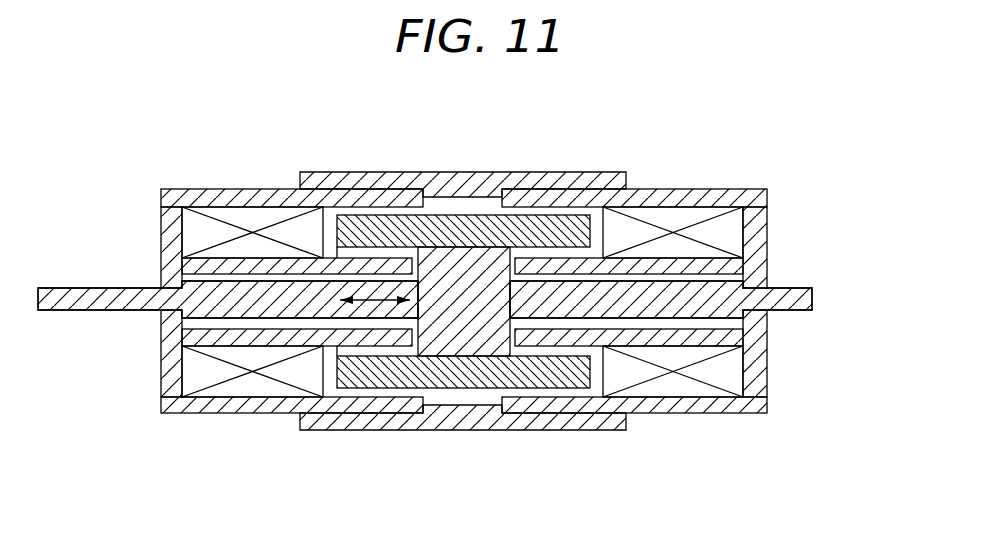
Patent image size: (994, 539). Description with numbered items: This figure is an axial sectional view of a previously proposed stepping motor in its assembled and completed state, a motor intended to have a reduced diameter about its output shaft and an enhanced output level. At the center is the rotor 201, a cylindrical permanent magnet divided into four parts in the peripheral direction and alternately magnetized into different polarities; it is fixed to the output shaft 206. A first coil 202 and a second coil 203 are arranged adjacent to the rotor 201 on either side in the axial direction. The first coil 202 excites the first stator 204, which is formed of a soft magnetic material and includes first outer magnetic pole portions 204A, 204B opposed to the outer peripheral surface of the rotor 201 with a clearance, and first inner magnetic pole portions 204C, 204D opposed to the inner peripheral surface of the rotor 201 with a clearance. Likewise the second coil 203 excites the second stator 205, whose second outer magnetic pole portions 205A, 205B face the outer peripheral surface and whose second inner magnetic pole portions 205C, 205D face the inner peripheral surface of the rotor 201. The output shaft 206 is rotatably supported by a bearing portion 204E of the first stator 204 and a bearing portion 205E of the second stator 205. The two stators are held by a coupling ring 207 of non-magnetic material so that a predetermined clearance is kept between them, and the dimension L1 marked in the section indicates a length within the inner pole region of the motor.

The rotor 201 is at (470, 390).
The first coil 202 is at (240, 388).
The second coil 203 is at (690, 390).
The first stator 204 is at (231, 295).
The first outer magnetic pole portion 204A is at (386, 195).
The first outer magnetic pole portion 204B is at (396, 400).
The first inner magnetic pole portion 204C is at (380, 262).
The first inner magnetic pole portion 204D is at (370, 338).
The bearing portion 204E is at (165, 328).
The second stator 205 is at (699, 303).
The second outer magnetic pole portion 205A is at (548, 195).
The second outer magnetic pole portion 205B is at (577, 408).
The second inner magnetic pole portion 205C is at (547, 262).
The second inner magnetic pole portion 205D is at (545, 338).
The bearing portion 205E is at (762, 268).
The output shaft 206 is at (78, 288).
The coupling ring 207 is at (465, 180).
The stroke length L1 is at (375, 295).